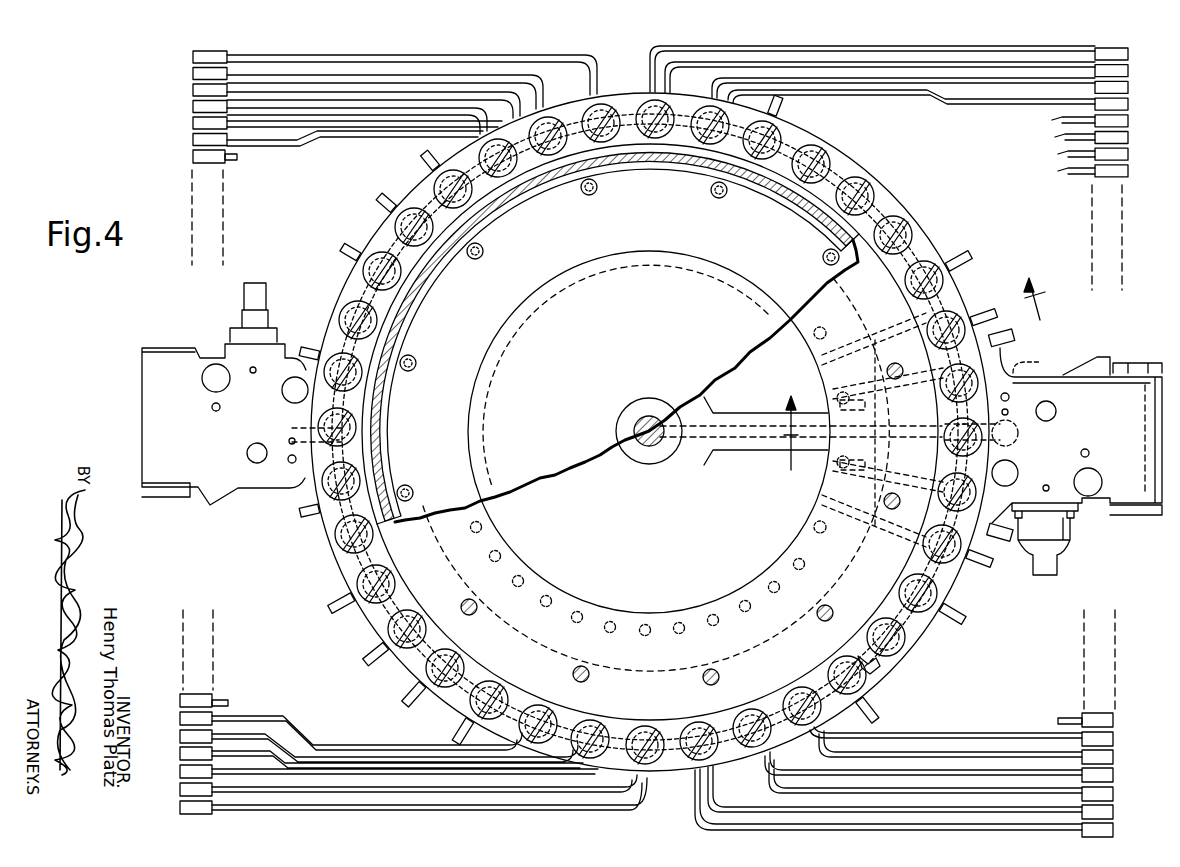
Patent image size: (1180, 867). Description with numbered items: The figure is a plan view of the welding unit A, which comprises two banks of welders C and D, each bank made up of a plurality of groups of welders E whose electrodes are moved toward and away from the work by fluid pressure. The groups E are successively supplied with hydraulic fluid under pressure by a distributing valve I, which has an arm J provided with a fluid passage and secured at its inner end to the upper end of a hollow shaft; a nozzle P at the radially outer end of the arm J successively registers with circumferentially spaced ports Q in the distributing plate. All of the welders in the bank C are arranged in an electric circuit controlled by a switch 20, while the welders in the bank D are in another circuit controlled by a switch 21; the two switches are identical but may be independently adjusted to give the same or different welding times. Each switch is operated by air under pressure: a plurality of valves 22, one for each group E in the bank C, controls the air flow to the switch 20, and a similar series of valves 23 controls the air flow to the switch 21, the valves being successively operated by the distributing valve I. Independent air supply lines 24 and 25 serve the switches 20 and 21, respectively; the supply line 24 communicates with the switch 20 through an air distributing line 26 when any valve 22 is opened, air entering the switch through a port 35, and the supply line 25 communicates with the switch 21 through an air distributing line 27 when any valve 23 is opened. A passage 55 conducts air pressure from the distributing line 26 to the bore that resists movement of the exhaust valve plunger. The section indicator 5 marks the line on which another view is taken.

The welding unit A is at (938, 243).
The bank of welders C is at (1128, 172).
The bank of welders D is at (187, 179).
The groups of welders E is at (193, 106).
The distributing valve I is at (745, 452).
The arm J is at (752, 413).
The nozzle P is at (815, 460).
The ports Q is at (830, 385).
The section line 5 is at (913, 374).
The switch 20 is at (1038, 377).
The switch 21 is at (207, 360).
The valves 22 is at (952, 300).
The valves 23 is at (346, 263).
The air supply line 24 is at (878, 668).
The air supply line 25 is at (428, 205).
The air distributing line 26 is at (1013, 431).
The air distributing line 27 is at (305, 426).
The port 35 is at (1006, 463).
The passage 55 is at (1011, 366).